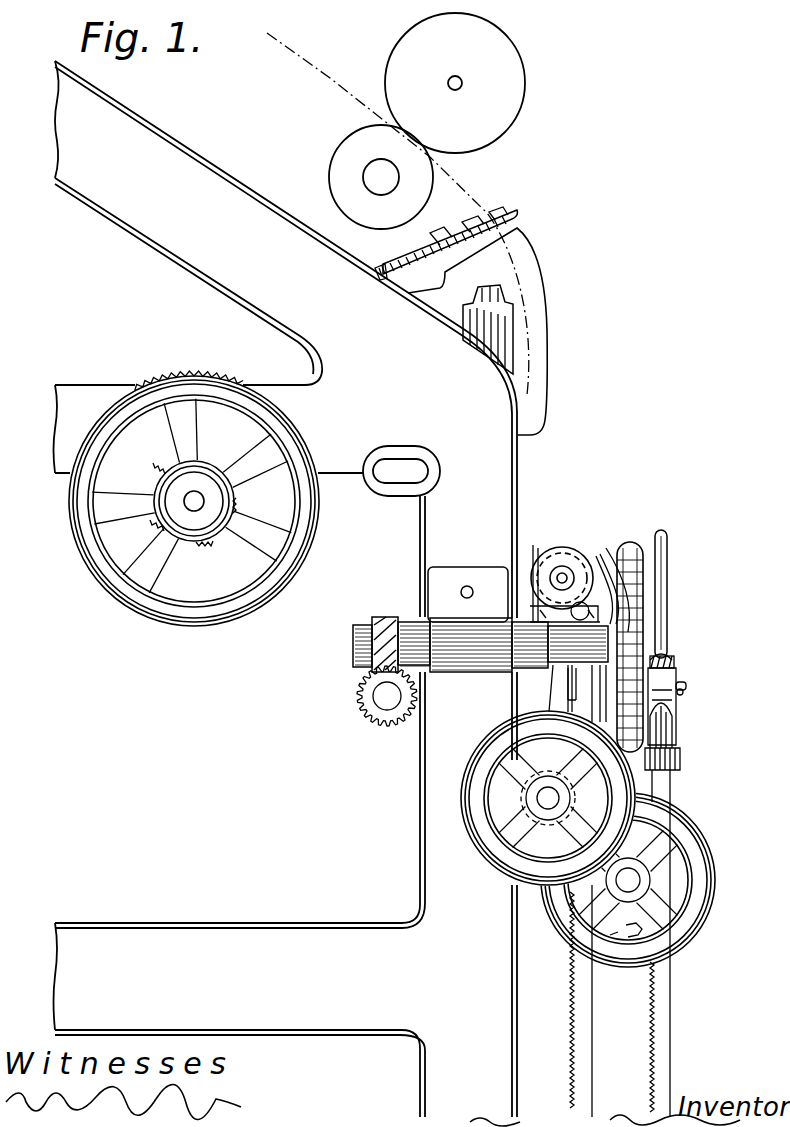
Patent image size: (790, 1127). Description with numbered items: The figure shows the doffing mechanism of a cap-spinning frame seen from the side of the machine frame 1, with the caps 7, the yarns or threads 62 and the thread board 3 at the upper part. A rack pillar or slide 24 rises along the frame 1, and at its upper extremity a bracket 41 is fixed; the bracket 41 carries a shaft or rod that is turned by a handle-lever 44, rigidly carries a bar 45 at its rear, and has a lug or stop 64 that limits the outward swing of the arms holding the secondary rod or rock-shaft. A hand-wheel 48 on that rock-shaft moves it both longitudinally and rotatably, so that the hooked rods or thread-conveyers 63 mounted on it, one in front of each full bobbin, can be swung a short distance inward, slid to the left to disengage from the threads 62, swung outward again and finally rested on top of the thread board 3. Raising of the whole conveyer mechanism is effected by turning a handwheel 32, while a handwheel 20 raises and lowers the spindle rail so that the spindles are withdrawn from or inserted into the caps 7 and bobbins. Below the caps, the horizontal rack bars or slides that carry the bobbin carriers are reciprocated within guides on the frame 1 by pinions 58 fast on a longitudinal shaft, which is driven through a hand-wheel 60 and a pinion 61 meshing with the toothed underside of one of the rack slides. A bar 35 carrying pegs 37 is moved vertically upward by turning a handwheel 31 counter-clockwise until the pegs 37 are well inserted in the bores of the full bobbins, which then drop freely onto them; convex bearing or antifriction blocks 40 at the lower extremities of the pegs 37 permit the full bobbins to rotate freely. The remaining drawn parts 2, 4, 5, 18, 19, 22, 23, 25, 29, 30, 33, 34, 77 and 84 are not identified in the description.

The frame 1 is at (286, 589).
The rollers 2 is at (427, 121).
The thread board 3 is at (504, 218).
The curved arm 4 is at (524, 251).
The ledger blade 5 is at (380, 272).
The cap 7 is at (471, 314).
The pinion 18 is at (383, 722).
The pinion shaft 19 is at (384, 695).
The handwheel 20 is at (633, 547).
The post 22 is at (672, 800).
The rack bar 23 is at (672, 785).
The rack pillar or slide 24 is at (580, 700).
The nut 25 is at (680, 762).
The hub 29 is at (636, 888).
The hub 30 is at (542, 790).
The handwheel 31 is at (690, 928).
The handwheel 32 is at (492, 856).
The casing 33 is at (676, 700).
The plunger 34 is at (678, 739).
The bar 35 is at (674, 663).
The peg 37 is at (667, 560).
The convex bearing or antifriction block 40 is at (664, 655).
The bracket 41 is at (587, 600).
The handle-lever 44 is at (570, 678).
The bar 45 is at (533, 565).
The hand-wheel 48 is at (565, 549).
The pinion 58 is at (168, 372).
The hand-wheel 60 is at (205, 614).
The pinion 61 is at (200, 548).
The yarn or thread 62 is at (308, 44).
The hooked rod or conveyer 63 is at (605, 560).
The lug or stop 64 is at (618, 542).
The pin 77 is at (686, 685).
The screw 84 is at (686, 692).